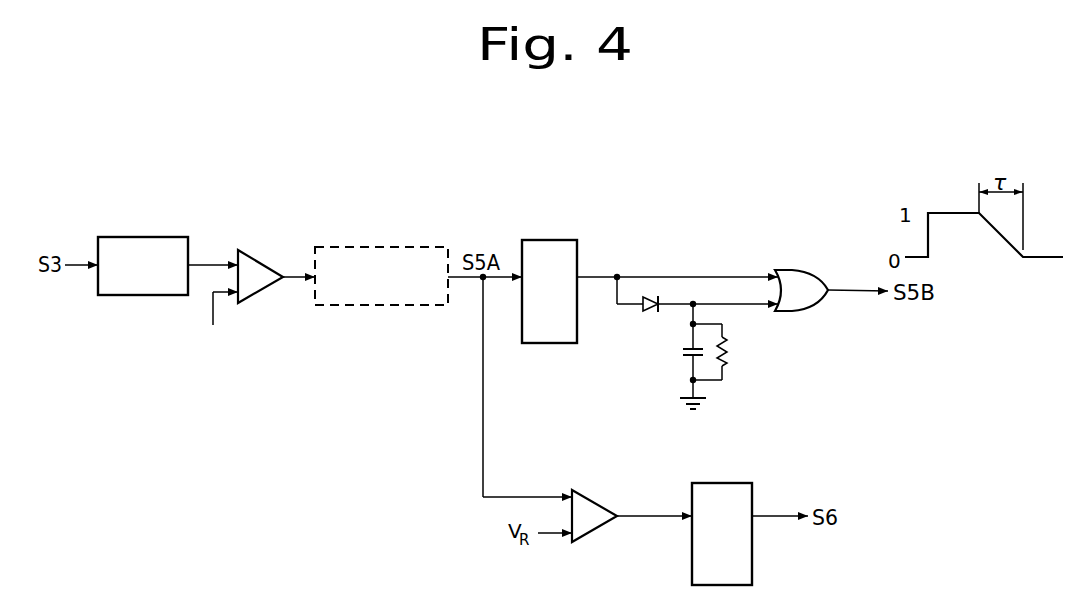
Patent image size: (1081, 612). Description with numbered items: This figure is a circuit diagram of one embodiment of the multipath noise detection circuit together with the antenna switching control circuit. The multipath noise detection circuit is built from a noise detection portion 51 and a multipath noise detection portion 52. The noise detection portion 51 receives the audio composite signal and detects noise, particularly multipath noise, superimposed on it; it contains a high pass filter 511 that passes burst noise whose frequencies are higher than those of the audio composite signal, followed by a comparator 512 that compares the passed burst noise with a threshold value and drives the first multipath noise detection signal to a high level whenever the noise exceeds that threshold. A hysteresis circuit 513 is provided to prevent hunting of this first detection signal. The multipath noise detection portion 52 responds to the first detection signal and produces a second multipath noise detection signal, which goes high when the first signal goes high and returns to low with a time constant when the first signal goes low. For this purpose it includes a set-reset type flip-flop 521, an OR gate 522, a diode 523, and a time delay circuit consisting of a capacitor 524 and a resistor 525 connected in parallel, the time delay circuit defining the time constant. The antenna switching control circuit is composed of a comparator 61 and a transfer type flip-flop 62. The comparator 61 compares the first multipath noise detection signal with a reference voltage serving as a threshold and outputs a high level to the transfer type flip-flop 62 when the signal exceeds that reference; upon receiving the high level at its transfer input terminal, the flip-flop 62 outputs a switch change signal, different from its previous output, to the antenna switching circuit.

The noise detection portion 51 is at (210, 164).
The high pass filter 511 is at (137, 235).
The comparator 512 is at (263, 258).
The hysteresis circuit 513 is at (376, 245).
The multipath noise detection portion 52 is at (712, 193).
The set-reset (SR)-type flip-flop 521 is at (550, 240).
The OR gate 522 is at (802, 265).
The diode 523 is at (650, 312).
The capacitor 524 is at (680, 352).
The resistor 525 is at (728, 350).
The comparator 61 is at (598, 498).
The transfer (T)-type flip-flop 62 is at (740, 483).